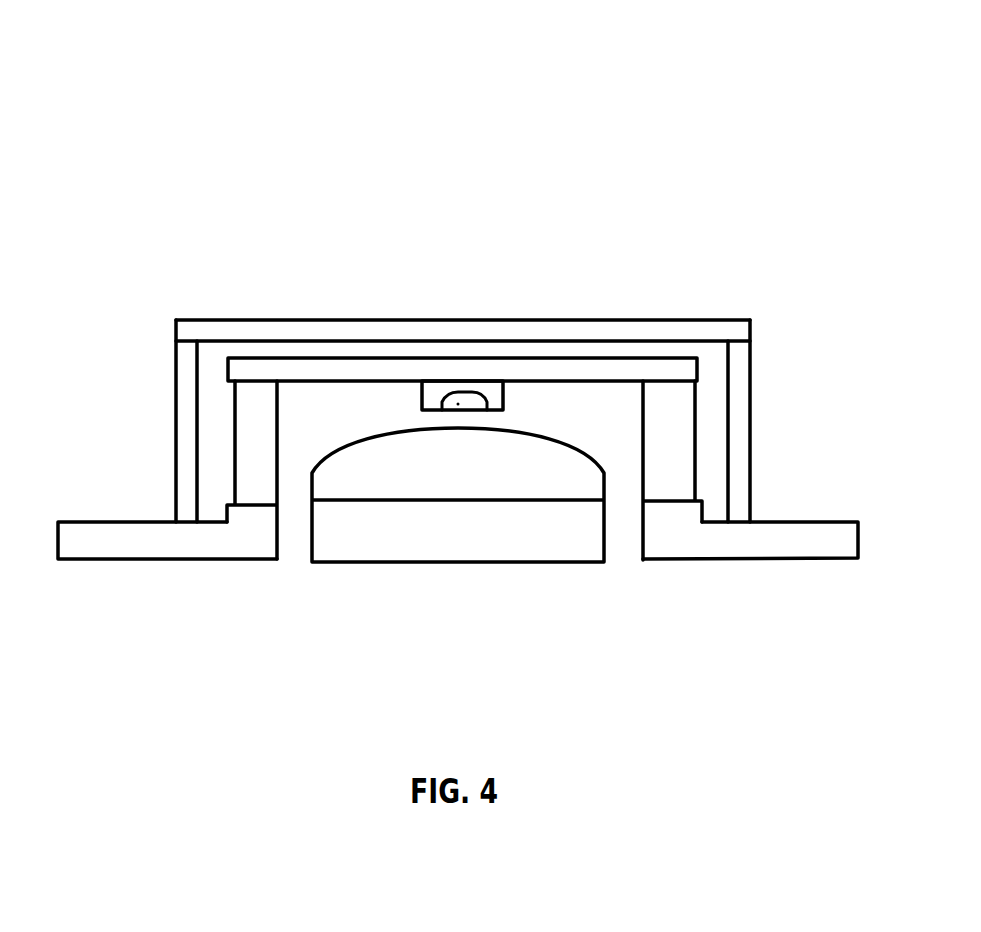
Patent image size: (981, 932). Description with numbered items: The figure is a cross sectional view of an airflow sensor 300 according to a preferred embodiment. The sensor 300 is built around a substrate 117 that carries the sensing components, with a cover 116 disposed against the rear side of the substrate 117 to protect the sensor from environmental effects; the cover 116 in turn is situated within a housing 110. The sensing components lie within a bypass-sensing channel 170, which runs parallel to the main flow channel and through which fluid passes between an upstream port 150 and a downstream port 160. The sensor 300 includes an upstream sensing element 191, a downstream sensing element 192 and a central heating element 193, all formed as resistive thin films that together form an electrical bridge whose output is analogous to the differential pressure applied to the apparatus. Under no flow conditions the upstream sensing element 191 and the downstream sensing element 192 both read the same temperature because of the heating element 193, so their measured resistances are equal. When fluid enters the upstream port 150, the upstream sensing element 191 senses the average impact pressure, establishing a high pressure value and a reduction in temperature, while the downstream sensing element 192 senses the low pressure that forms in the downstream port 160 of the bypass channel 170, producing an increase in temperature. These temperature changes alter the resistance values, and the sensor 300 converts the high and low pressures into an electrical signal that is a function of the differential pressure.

The airflow sensor 300 is at (736, 96).
The housing 110 is at (717, 402).
The cover 116 is at (623, 330).
The substrate 117 is at (325, 368).
The bypass-sensing channel 170 is at (318, 400).
The upstream port 150 is at (298, 557).
The downstream port 160 is at (620, 563).
The upstream sensing element 191 is at (457, 392).
The downstream sensing element 192 is at (468, 400).
The central heating element 193 is at (462, 394).